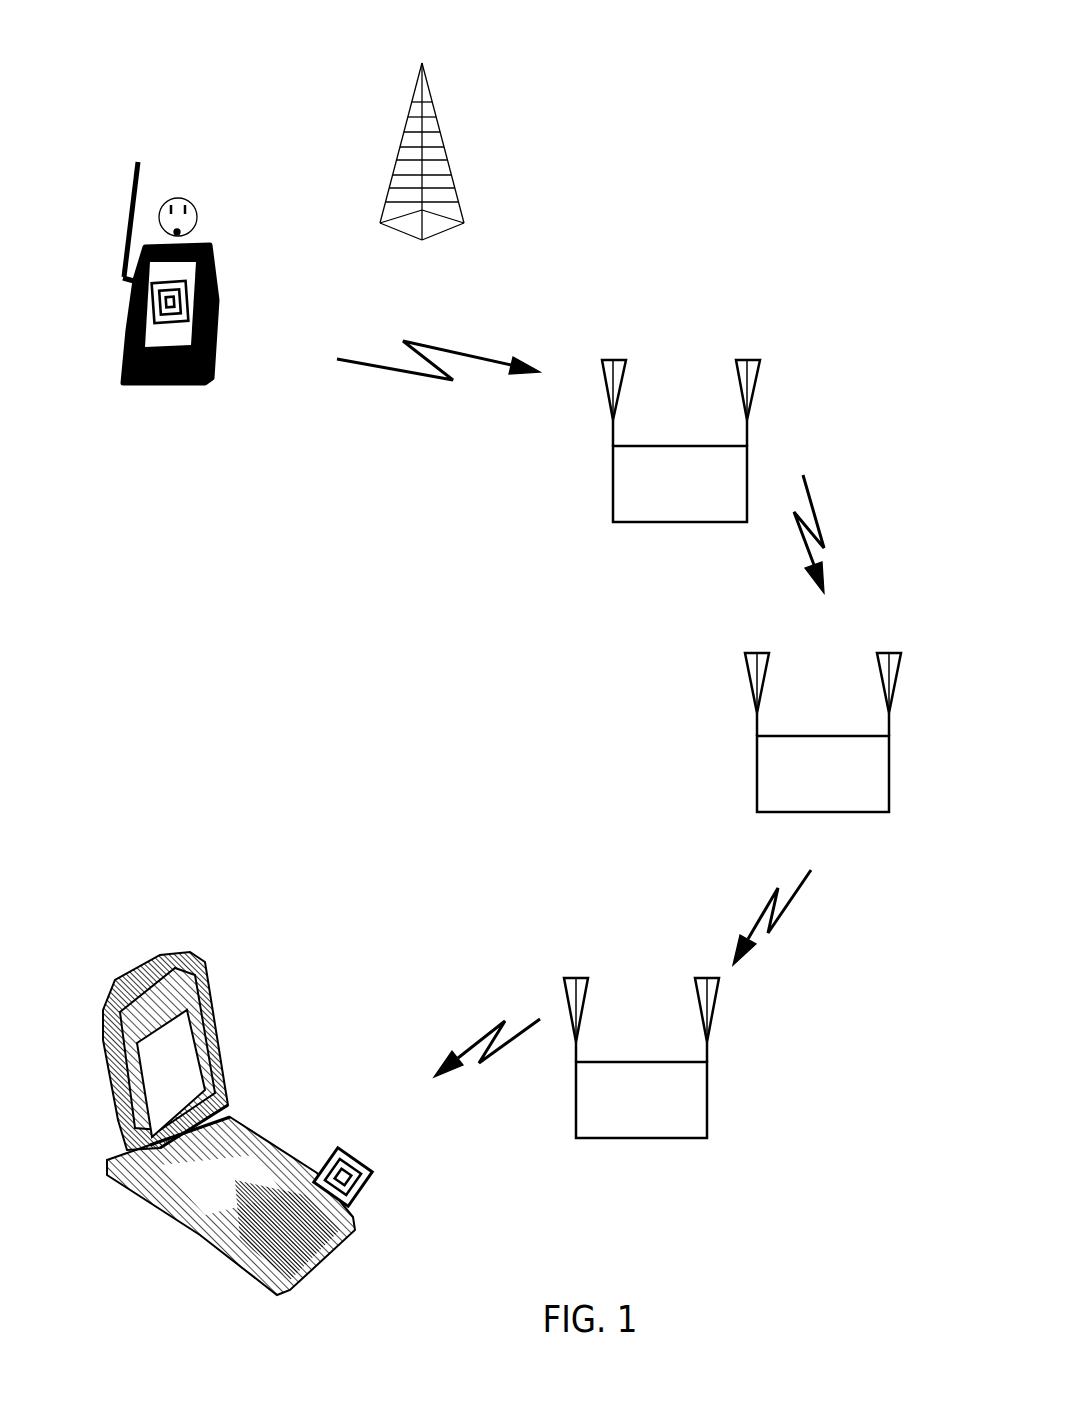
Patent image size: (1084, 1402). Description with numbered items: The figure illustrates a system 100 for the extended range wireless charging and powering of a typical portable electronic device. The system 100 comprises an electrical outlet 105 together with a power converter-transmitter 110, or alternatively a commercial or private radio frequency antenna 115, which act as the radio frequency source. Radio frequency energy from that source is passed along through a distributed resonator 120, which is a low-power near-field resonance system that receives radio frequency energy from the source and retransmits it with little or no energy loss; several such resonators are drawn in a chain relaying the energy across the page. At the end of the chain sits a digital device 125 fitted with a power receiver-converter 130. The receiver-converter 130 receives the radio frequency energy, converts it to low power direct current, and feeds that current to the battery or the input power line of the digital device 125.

The system 100 is at (189, 85).
The electrical outlet 105 is at (202, 195).
The power converter-transmitter 110 is at (225, 277).
The radio frequency antenna 115 is at (457, 148).
The distributed resonator 120 is at (732, 749).
The digital device 125 is at (243, 1064).
The power receiver-converter 130 is at (327, 1135).